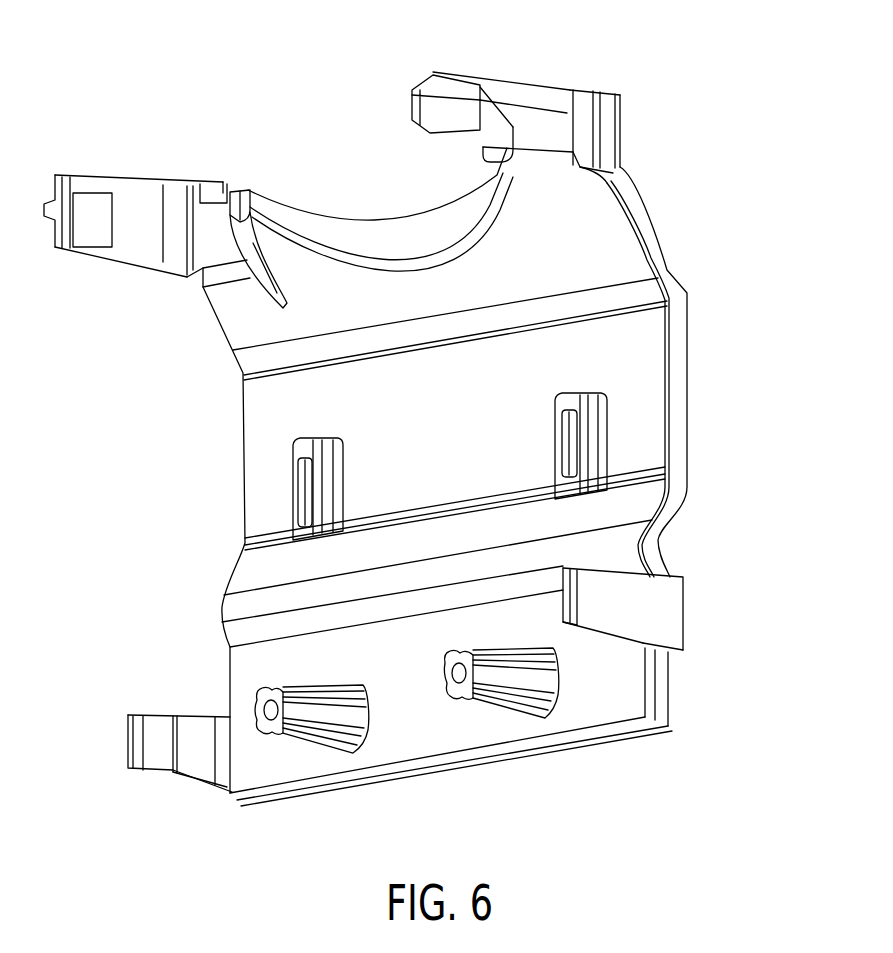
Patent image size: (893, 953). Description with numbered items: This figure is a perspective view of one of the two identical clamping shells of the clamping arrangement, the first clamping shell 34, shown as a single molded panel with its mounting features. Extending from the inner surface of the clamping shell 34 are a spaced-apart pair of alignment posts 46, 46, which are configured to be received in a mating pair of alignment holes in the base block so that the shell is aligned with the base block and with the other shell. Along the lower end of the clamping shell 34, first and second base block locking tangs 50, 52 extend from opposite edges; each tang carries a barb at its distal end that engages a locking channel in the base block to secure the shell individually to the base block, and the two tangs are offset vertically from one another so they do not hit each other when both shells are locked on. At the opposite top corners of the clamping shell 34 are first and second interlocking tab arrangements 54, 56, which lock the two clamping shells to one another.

The first clamping shell 34 is at (638, 370).
The alignment post 46 is at (323, 747).
The first base block locking tang 50 is at (645, 613).
The second base block locking tang 52 is at (156, 727).
The first interlocking tab arrangement 54 is at (500, 92).
The second interlocking tab arrangement 56 is at (133, 207).